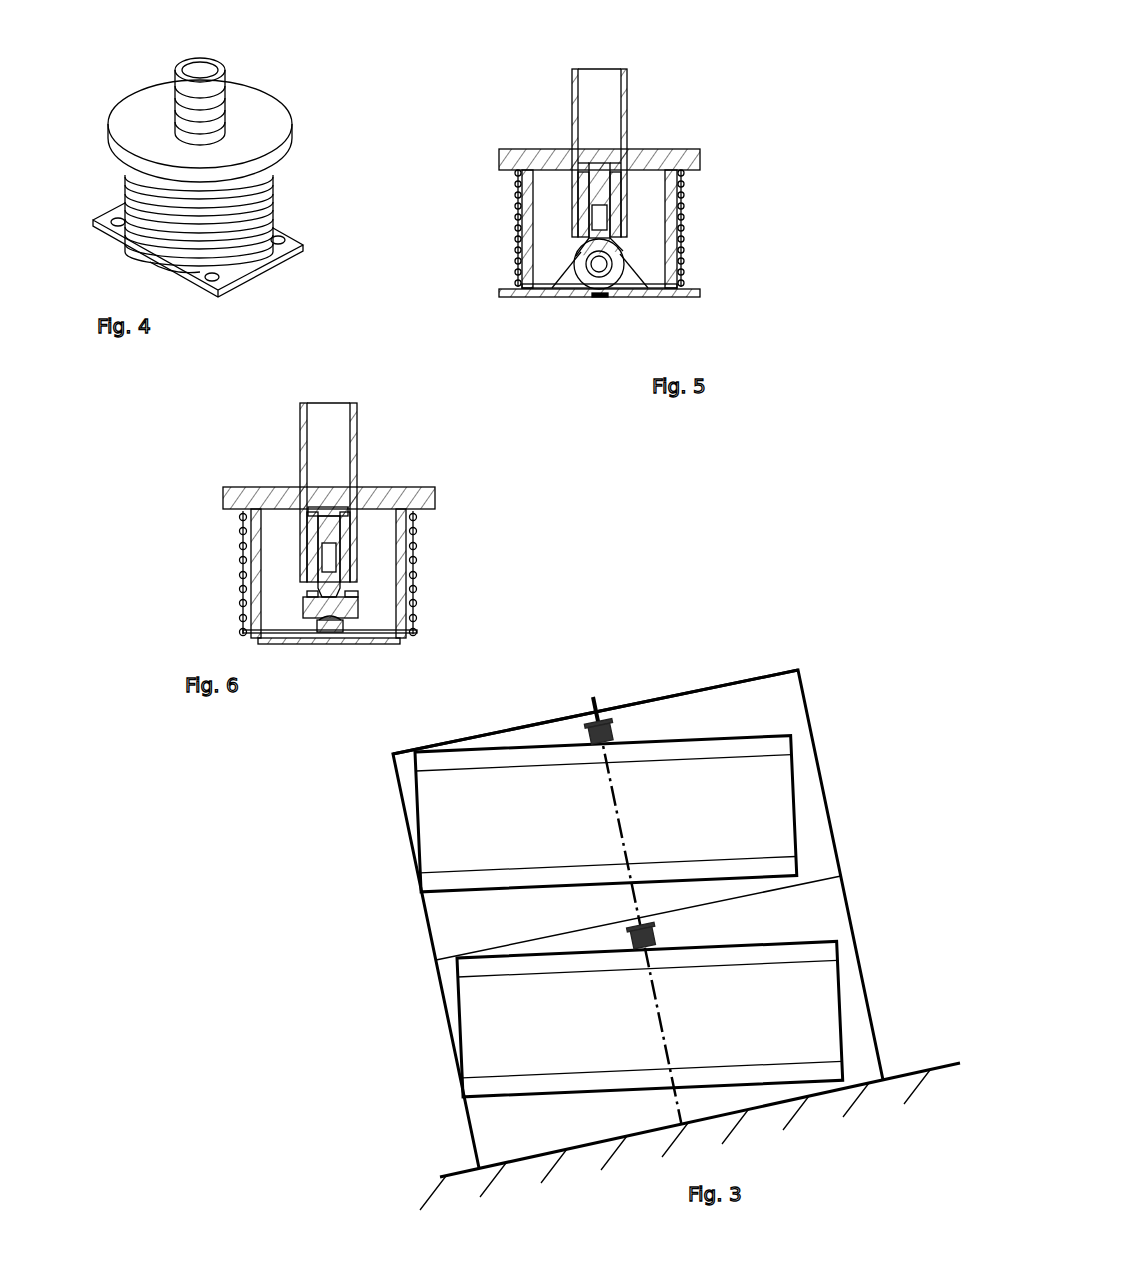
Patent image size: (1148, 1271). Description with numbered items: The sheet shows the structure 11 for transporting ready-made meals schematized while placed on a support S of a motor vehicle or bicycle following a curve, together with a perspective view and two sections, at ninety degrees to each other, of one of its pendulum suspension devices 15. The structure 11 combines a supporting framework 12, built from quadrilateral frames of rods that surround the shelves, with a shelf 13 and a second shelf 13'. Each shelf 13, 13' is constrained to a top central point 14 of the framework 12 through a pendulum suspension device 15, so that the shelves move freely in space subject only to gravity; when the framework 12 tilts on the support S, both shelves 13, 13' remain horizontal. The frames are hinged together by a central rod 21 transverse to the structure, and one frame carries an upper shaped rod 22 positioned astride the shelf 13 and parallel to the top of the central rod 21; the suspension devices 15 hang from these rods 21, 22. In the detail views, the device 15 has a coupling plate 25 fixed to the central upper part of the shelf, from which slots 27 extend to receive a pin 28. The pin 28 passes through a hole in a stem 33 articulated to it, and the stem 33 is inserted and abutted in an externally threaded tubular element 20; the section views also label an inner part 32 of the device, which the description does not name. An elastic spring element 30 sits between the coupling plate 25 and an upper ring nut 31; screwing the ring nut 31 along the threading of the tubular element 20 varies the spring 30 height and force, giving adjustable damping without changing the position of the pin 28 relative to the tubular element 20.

In FIG. 3, the structure 11 is at (636, 933).
In FIG. 3, the supporting framework 12 is at (838, 802).
In FIG. 3, the shelf 13 is at (568, 814).
In FIG. 3, the second shelf 13' is at (611, 1018).
In FIG. 3, the top central point 14 is at (606, 706).
In FIG. 4, the pendulum suspension device 15 is at (208, 164).
In FIG. 5, the pendulum suspension device 15 is at (601, 199).
In FIG. 6, the pendulum suspension device 15 is at (343, 550).
In FIG. 3, the pendulum suspension device 15 is at (620, 732).
In FIG. 4, the tubular element 20 is at (214, 94).
In FIG. 5, the tubular element 20 is at (624, 102).
In FIG. 6, the tubular element 20 is at (328, 492).
In FIG. 3, the central rod 21 is at (549, 928).
In FIG. 6, the upper shaped rod 22 is at (313, 629).
In FIG. 3, the upper shaped rod 22 is at (479, 732).
In FIG. 4, the coupling plate 25 is at (285, 262).
In FIG. 5, the coupling plate 25 is at (675, 298).
In FIG. 6, the coupling plate 25 is at (405, 643).
In FIG. 5, the slots 27 is at (569, 289).
In FIG. 6, the slots 27 is at (352, 632).
In FIG. 5, the pin 28 is at (598, 274).
In FIG. 6, the pin 28 is at (331, 609).
In FIG. 4, the elastic spring element 30 is at (122, 195).
In FIG. 5, the elastic spring element 30 is at (516, 238).
In FIG. 6, the elastic spring element 30 is at (240, 547).
In FIG. 4, the upper ring nut 31 is at (122, 113).
In FIG. 5, the upper ring nut 31 is at (528, 156).
In FIG. 6, the upper ring nut 31 is at (411, 492).
In FIG. 5, the piston / stem 32 is at (593, 172).
In FIG. 6, the piston / stem 32 is at (321, 506).
In FIG. 5, the stem 33 is at (608, 241).
In FIG. 3, the support S is at (456, 1175).